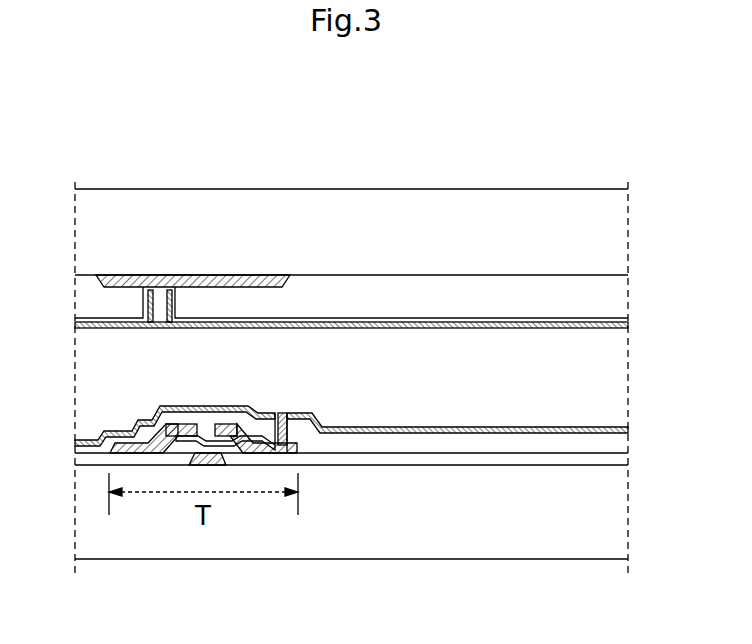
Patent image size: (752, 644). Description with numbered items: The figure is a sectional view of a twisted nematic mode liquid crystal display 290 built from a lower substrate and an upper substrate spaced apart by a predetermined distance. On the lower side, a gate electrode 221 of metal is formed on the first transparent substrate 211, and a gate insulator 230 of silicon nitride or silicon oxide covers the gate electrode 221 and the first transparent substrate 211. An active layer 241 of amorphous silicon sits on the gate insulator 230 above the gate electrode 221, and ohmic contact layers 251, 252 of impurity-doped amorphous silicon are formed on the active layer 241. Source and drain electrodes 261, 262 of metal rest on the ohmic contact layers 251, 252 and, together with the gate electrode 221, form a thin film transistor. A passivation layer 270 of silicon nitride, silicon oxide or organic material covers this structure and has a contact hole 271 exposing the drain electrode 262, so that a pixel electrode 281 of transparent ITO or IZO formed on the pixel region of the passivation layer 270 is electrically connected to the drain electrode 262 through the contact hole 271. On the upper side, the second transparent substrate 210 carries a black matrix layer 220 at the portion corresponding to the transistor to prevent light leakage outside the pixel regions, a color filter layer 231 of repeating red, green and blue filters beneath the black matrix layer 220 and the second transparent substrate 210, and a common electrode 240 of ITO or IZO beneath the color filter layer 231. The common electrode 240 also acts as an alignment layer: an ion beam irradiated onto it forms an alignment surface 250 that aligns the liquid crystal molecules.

The second transparent substrate 210 is at (273, 210).
The first transparent substrate 211 is at (407, 548).
The black matrix layer 220 is at (157, 287).
The gate electrode 221 is at (197, 467).
The gate insulator 230 is at (505, 458).
The color filter layer 231 is at (350, 295).
The common electrode 240 is at (470, 318).
The active layer 241 is at (213, 443).
The alignment surface 250 is at (578, 318).
The ohmic contact layer 251 is at (167, 447).
The ohmic contact layer 252 is at (237, 424).
The source electrode 261 is at (175, 424).
The drain electrode 262 is at (227, 424).
The passivation layer 270 is at (88, 430).
The contact hole 271 is at (285, 432).
The pixel electrode 281 is at (395, 427).
The display device 290 is at (608, 374).